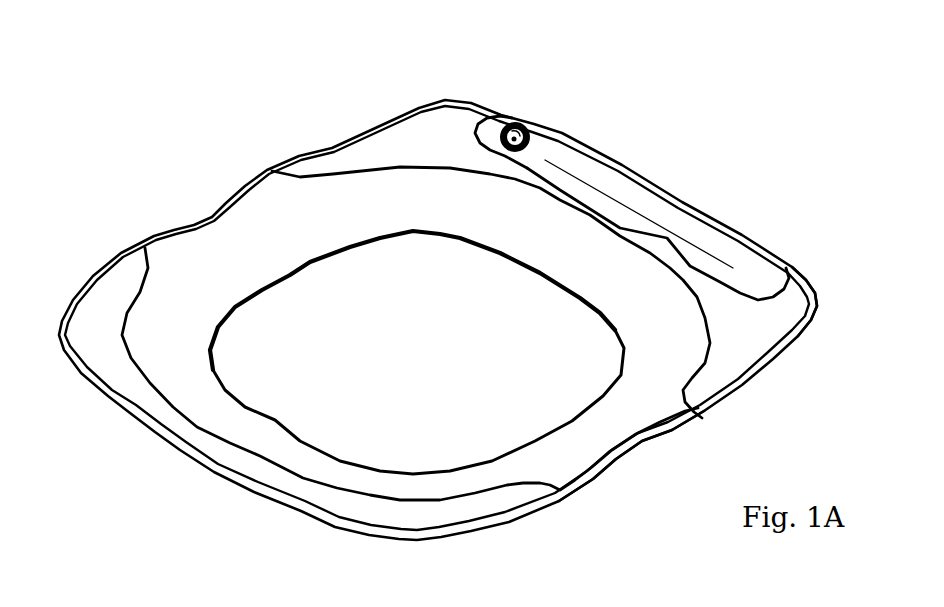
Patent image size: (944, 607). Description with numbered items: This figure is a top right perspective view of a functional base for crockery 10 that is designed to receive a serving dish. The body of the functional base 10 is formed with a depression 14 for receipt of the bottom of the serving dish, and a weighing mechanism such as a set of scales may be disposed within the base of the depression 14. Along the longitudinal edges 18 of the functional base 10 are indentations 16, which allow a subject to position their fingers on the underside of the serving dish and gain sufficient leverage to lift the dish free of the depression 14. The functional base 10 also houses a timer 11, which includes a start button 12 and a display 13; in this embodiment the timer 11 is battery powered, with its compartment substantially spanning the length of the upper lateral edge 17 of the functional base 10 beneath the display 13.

The functional base for crockery 10 is at (100, 117).
The timer 11 is at (490, 118).
The start button 12 is at (533, 122).
The display 13 is at (655, 205).
The depression 14 is at (313, 378).
The indentations 16 is at (217, 213).
The upper lateral edge 17 is at (793, 270).
The longitudinal edges 18 is at (320, 143).